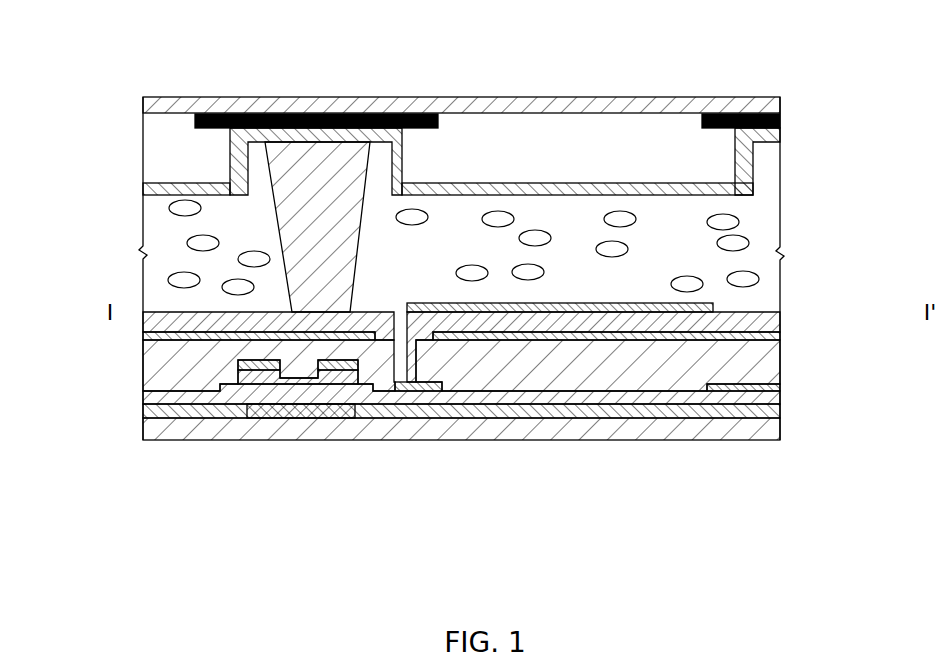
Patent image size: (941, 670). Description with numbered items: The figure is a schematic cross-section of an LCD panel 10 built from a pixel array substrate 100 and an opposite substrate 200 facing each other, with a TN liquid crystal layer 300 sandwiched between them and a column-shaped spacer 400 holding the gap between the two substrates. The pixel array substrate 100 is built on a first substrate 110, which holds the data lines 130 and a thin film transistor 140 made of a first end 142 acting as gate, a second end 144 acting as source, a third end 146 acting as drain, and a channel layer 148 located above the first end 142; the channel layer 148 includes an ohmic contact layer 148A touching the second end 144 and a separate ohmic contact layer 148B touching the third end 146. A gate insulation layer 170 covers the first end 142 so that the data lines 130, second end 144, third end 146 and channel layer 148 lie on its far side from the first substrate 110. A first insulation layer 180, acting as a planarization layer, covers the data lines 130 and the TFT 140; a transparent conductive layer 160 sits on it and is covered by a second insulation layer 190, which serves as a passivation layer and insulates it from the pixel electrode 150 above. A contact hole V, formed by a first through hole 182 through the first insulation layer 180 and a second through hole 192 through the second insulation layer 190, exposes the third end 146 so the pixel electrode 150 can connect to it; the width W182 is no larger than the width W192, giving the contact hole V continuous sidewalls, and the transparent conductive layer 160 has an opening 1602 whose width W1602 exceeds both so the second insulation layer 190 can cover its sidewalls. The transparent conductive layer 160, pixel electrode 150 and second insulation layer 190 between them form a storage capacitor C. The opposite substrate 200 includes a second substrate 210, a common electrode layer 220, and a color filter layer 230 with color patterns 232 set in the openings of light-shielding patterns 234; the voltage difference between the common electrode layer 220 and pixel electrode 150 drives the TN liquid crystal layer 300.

The LCD panel 10 is at (869, 540).
The pixel array substrate 100 is at (136, 315).
The first substrate 110 is at (780, 432).
The data lines 130 is at (780, 398).
The thin film transistor 140 is at (380, 507).
The first end 142 is at (330, 417).
The second end 144 is at (228, 386).
The third end 146 is at (366, 384).
The channel layer 148 is at (275, 378).
The ohmic contact layer 148A is at (250, 368).
The ohmic contact layer 148B is at (330, 368).
The pixel electrode 150 is at (713, 307).
The transparent conductive layer 160 is at (780, 336).
The opening 1602 is at (438, 333).
The gate insulation layer 170 is at (780, 411).
The first insulation layer 180 is at (780, 372).
The first through hole 182 is at (422, 367).
The second insulation layer 190 is at (780, 322).
The second through hole 192 is at (421, 326).
The opposite substrate 200 is at (860, 108).
The second substrate 210 is at (780, 105).
The common electrode layer 220 is at (740, 190).
The color filter layer 230 is at (780, 160).
The color patterns 232 is at (530, 150).
The light-shielding patterns 234 is at (364, 113).
The TN liquid crystal layer 300 is at (780, 222).
The spacer 400 is at (287, 212).
The contact hole V is at (450, 496).
The storage capacitor C is at (862, 284).
The width of the first through hole W182 is at (395, 440).
The width of the second through hole W192 is at (436, 296).
The width of the opening W1602 is at (433, 304).